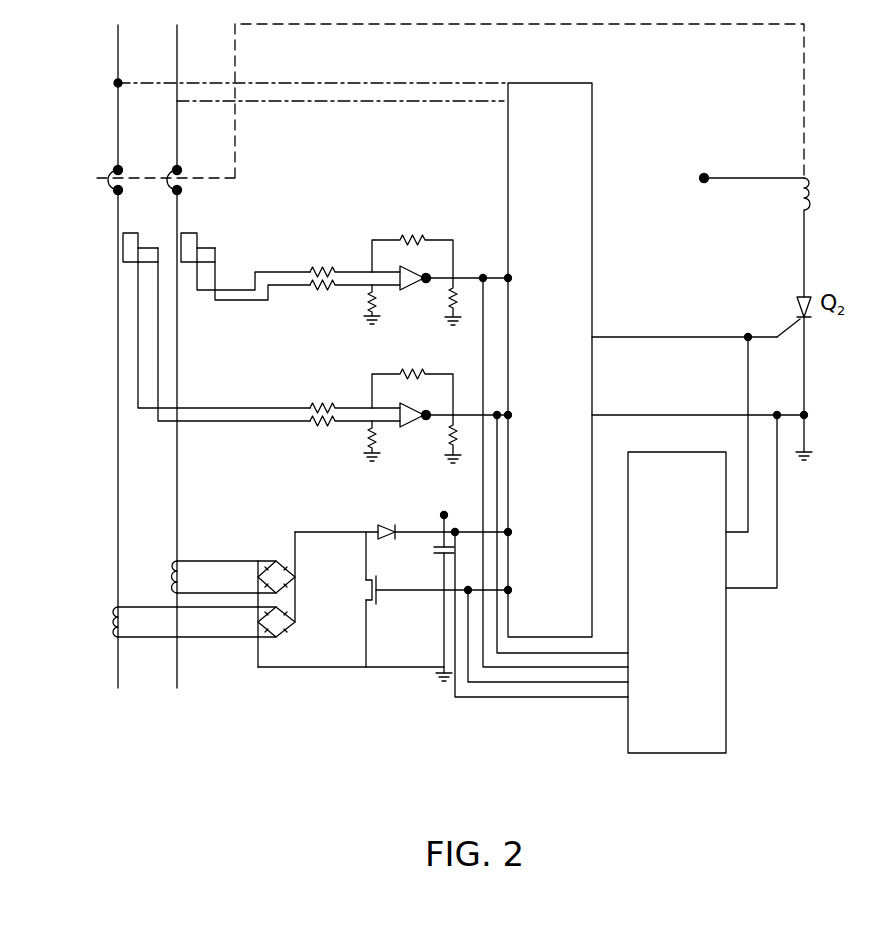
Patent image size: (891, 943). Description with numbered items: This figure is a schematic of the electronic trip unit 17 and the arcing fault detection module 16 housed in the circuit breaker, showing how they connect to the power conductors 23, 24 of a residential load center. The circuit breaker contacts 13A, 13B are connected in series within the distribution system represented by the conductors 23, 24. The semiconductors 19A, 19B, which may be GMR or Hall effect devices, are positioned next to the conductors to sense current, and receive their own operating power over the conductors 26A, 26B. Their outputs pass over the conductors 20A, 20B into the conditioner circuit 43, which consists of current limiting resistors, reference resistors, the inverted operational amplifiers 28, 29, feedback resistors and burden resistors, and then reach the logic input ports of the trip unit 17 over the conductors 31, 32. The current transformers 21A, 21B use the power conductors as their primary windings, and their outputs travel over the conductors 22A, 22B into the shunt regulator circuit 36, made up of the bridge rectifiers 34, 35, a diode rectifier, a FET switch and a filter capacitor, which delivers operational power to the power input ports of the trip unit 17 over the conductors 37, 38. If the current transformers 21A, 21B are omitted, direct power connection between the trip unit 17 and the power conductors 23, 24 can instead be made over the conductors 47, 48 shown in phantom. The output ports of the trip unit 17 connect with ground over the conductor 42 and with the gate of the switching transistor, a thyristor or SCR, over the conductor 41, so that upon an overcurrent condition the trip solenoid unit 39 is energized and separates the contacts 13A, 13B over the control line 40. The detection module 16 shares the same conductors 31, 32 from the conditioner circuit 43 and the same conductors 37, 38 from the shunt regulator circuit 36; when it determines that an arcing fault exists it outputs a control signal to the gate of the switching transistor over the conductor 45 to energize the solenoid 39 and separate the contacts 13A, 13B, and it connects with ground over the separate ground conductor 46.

The circuit breaker contact 13A is at (123, 167).
The circuit breaker contact 13B is at (176, 167).
The arcing fault detection module 16 is at (725, 753).
The trip unit 17 is at (591, 82).
The semiconductor 19A is at (123, 233).
The semiconductor 19B is at (182, 233).
The conductor 20A is at (158, 335).
The conductor 20B is at (272, 270).
The current transformer 21A is at (122, 605).
The current transformer 21B is at (180, 560).
The conductor 22A is at (160, 607).
The conductor 22B is at (235, 561).
The power conductor 23 is at (122, 472).
The power conductor 24 is at (182, 472).
The conductor 26A is at (133, 265).
The conductor 26B is at (205, 265).
The inverted operational amplifier 28 is at (411, 273).
The inverted operational amplifier 29 is at (411, 410).
The conductor 31 is at (465, 278).
The conductor 32 is at (466, 413).
The bridge rectifier 34 is at (307, 570).
The bridge rectifier 35 is at (307, 613).
The shunt regulator circuit 36 is at (370, 616).
The conductor 37 is at (443, 515).
The conductor 38 is at (466, 592).
The trip solenoid unit 39 is at (810, 180).
The control line 40 is at (808, 75).
The conductor 41 is at (665, 335).
The conductor 42 is at (665, 413).
The conditioner circuit 43 is at (385, 319).
The conductor 45 is at (748, 443).
The ground conductor 46 is at (777, 576).
The conductor 47 is at (278, 82).
The conductor 48 is at (349, 100).